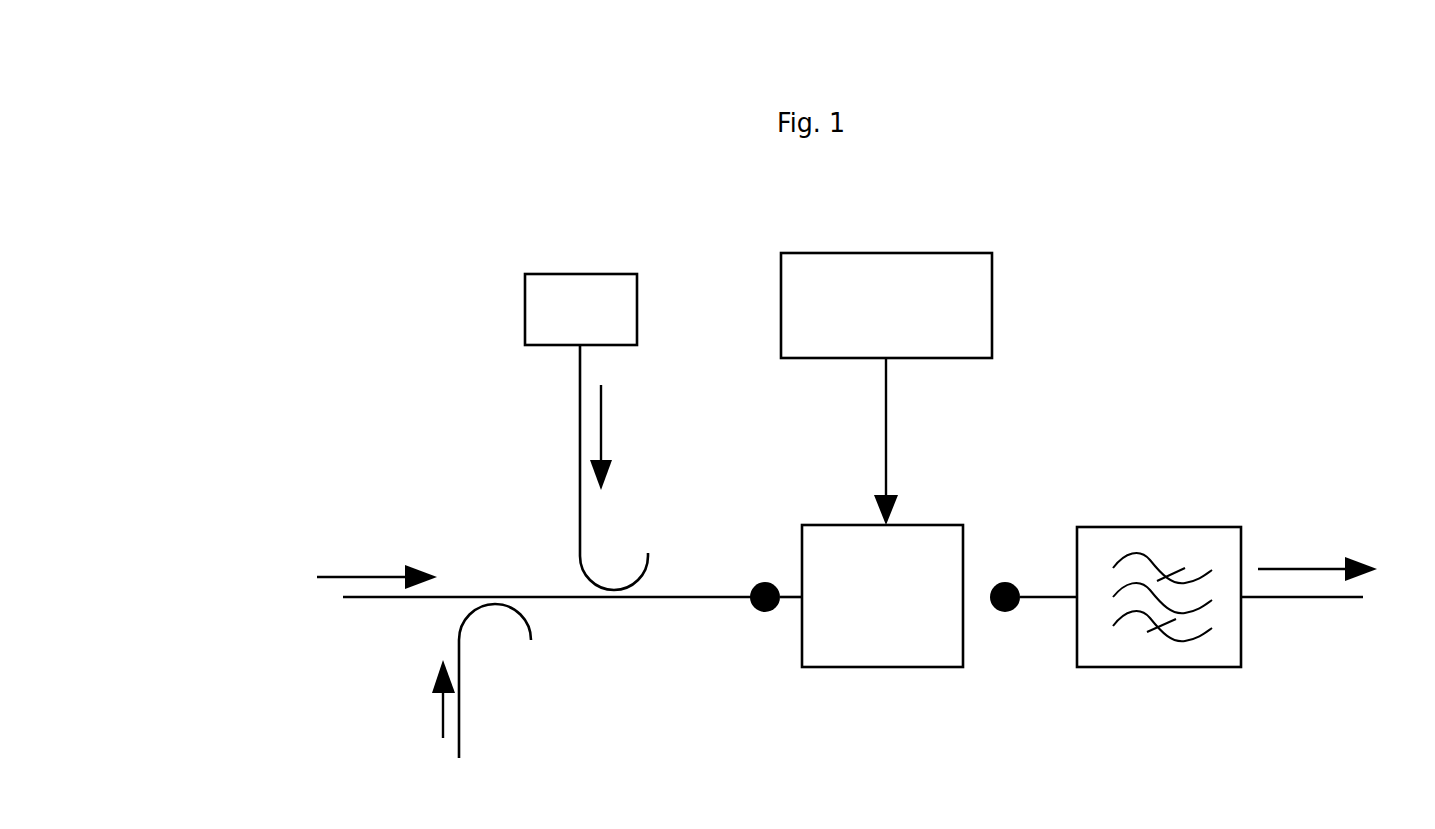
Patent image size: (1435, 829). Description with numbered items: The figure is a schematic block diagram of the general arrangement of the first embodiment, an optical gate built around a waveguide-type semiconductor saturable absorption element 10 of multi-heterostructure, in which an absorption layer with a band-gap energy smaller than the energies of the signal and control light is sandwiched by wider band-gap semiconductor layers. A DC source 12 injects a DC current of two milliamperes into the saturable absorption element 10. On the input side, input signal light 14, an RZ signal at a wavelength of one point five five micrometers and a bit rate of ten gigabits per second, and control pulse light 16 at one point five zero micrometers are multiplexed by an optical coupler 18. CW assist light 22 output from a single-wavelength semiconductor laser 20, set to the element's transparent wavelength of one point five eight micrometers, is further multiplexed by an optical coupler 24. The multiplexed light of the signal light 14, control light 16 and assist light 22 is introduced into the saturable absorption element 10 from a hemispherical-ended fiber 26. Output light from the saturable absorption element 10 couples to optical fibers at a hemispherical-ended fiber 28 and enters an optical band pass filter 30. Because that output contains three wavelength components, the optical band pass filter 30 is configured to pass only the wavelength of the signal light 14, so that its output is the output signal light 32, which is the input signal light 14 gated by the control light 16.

The semiconductor saturable absorption element 10 is at (877, 655).
The DC source 12 is at (977, 303).
The input signal light 14 is at (352, 575).
The control pulse light 16 is at (443, 712).
The optical coupler 18 is at (480, 622).
The single-wavelength semiconductor laser 20 is at (525, 312).
The assist light 22 is at (692, 437).
The optical coupler 24 is at (613, 572).
The hemispherical-ended fiber 26 is at (762, 622).
The hemispherical-ended fiber 28 is at (1008, 622).
The optical band pass filter 30 is at (1172, 655).
The output signal light 32 is at (1303, 569).